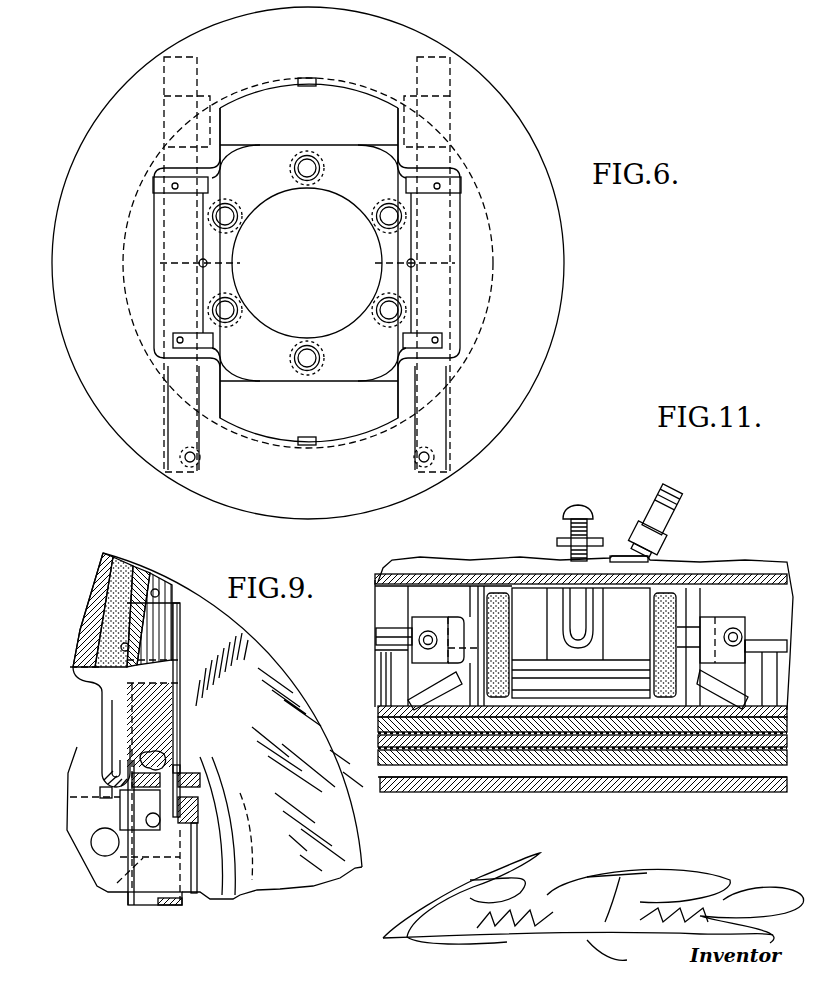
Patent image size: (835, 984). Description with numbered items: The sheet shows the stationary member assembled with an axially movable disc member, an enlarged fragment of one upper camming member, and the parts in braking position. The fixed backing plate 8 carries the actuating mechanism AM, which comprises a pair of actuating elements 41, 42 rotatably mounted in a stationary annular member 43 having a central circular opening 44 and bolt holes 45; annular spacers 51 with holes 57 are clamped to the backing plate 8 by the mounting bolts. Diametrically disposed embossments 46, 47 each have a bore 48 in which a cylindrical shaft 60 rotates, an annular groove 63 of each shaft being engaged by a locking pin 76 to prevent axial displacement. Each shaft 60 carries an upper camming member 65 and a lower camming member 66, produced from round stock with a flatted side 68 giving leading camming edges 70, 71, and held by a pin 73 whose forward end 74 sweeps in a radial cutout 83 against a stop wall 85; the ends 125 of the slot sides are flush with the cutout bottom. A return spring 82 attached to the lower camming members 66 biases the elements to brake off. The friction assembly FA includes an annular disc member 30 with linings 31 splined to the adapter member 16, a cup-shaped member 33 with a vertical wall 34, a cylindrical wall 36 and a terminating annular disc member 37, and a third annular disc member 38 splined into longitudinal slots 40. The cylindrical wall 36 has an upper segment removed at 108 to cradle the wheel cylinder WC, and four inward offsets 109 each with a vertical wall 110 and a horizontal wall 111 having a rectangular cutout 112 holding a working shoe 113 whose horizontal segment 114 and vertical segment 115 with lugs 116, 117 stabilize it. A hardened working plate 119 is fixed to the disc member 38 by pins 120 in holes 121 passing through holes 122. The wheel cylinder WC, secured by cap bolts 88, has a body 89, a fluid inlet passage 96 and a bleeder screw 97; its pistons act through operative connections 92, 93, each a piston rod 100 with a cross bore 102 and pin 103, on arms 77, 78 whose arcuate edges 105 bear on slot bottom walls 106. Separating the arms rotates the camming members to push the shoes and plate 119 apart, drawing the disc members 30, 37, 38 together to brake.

In FIG. 11, the backing plate 8 is at (700, 578).
In FIG. 11, the adapter member 16 is at (549, 794).
In FIG. 11, the annular disc member 30 is at (379, 752).
In FIG. 9, the linings 31 is at (131, 560).
In FIG. 11, the linings 31 is at (379, 733).
In FIG. 6, the cup-shaped member 33 is at (566, 255).
In FIG. 9, the cup-shaped member 33 is at (258, 893).
In FIG. 6, the vertical wall 34 is at (309, 263).
In FIG. 9, the vertical wall 34 is at (200, 774).
In FIG. 11, the vertical wall 34 is at (396, 625).
In FIG. 6, the cylindrical wall 36 is at (490, 297).
In FIG. 9, the cylindrical wall 36 is at (75, 669).
In FIG. 6, the annular disc member 37 is at (540, 322).
In FIG. 9, the annular disc member 37 is at (108, 552).
In FIG. 11, the annular disc member 37 is at (380, 785).
In FIG. 9, the third annular disc member 38 is at (157, 578).
In FIG. 11, the third annular disc member 38 is at (380, 710).
In FIG. 6, the longitudinal slots 40 is at (310, 437).
In FIG. 6, the actuating element 41 is at (163, 98).
In FIG. 11, the actuating element 41 is at (392, 686).
In FIG. 6, the actuating element 42 is at (452, 96).
In FIG. 9, the actuating element 42 is at (135, 906).
In FIG. 11, the actuating element 42 is at (745, 708).
In FIG. 6, the stationary annular member 43 is at (352, 334).
In FIG. 9, the stationary annular member 43 is at (110, 893).
In FIG. 6, the central circular opening 44 is at (265, 350).
In FIG. 9, the central circular opening 44 is at (88, 871).
In FIG. 6, the bolt holes 45 is at (384, 216).
In FIG. 9, the bolt holes 45 is at (92, 843).
In FIG. 6, the embossment 46 is at (155, 222).
In FIG. 6, the embossment 47 is at (461, 228).
In FIG. 9, the embossment 47 is at (233, 902).
In FIG. 6, the bore 48 is at (163, 266).
In FIG. 9, the bore 48 is at (186, 906).
In FIG. 6, the annular spacer 51 is at (283, 233).
In FIG. 6, the holes 57 is at (318, 352).
In FIG. 6, the cylindrical shaft 60 is at (448, 290).
In FIG. 9, the cylindrical shaft 60 is at (165, 906).
In FIG. 6, the annular groove 63 is at (160, 262).
In FIG. 6, the upper camming member 65 is at (163, 72).
In FIG. 9, the upper camming member 65 is at (183, 661).
In FIG. 6, the lower camming member 66 is at (160, 420).
In FIG. 9, the flatted side 68 is at (169, 776).
In FIG. 11, the leading camming edge 70 is at (689, 647).
In FIG. 9, the leading camming edge 71 is at (181, 636).
In FIG. 11, the leading camming edge 71 is at (428, 708).
In FIG. 6, the pin 73 is at (153, 185).
In FIG. 9, the forward end 74 is at (155, 830).
In FIG. 6, the locking pin 76 is at (307, 262).
In FIG. 11, the arm 77 is at (380, 633).
In FIG. 11, the arm 78 is at (762, 708).
In FIG. 6, the return spring 82 is at (205, 448).
In FIG. 9, the radial cutout 83 is at (197, 828).
In FIG. 6, the wall 85 is at (442, 347).
In FIG. 9, the wall 85 is at (134, 802).
In FIG. 11, the cap bolts 88 is at (648, 558).
In FIG. 11, the body 89 is at (522, 600).
In FIG. 11, the operative connection 92 is at (426, 615).
In FIG. 11, the operative connection 93 is at (712, 617).
In FIG. 11, the fluid inlet passage 96 is at (648, 500).
In FIG. 11, the bleeder screw 97 is at (565, 527).
In FIG. 11, the piston rod 100 is at (472, 630).
In FIG. 11, the cross bore 102 is at (397, 565).
In FIG. 11, the pin 103 is at (737, 630).
In FIG. 11, the arcuate confronting edge 105 is at (710, 617).
In FIG. 11, the bottom wall 106 is at (440, 615).
In FIG. 6, the removed upper segment 108 is at (297, 146).
In FIG. 9, the removed upper segment 108 is at (78, 747).
In FIG. 11, the removed upper segment 108 is at (538, 690).
In FIG. 6, the offset 109 is at (221, 160).
In FIG. 9, the offset 109 is at (118, 722).
In FIG. 11, the offset 109 is at (388, 665).
In FIG. 6, the vertical wall 110 is at (222, 130).
In FIG. 6, the horizontal wall 111 is at (190, 168).
In FIG. 9, the horizontal wall 111 is at (100, 790).
In FIG. 9, the rectangular cutout 112 is at (178, 768).
In FIG. 9, the working shoe 113 is at (146, 750).
In FIG. 9, the horizontal segment 114 is at (106, 782).
In FIG. 9, the vertical segment 115 is at (107, 896).
In FIG. 9, the lug 116 is at (75, 805).
In FIG. 9, the lug 117 is at (202, 782).
In FIG. 9, the working plate 119 is at (248, 647).
In FIG. 11, the working plate 119 is at (413, 700).
In FIG. 9, the pins 120 is at (160, 590).
In FIG. 9, the holes 121 is at (121, 645).
In FIG. 9, the holes 122 is at (160, 592).
In FIG. 9, the slot side ends 125 is at (200, 810).
In FIG. 6, the actuating mechanism AM is at (254, 338).
In FIG. 9, the actuating mechanism AM is at (92, 908).
In FIG. 11, the friction assembly FA is at (737, 770).
In FIG. 11, the wheel cylinder WC is at (642, 646).